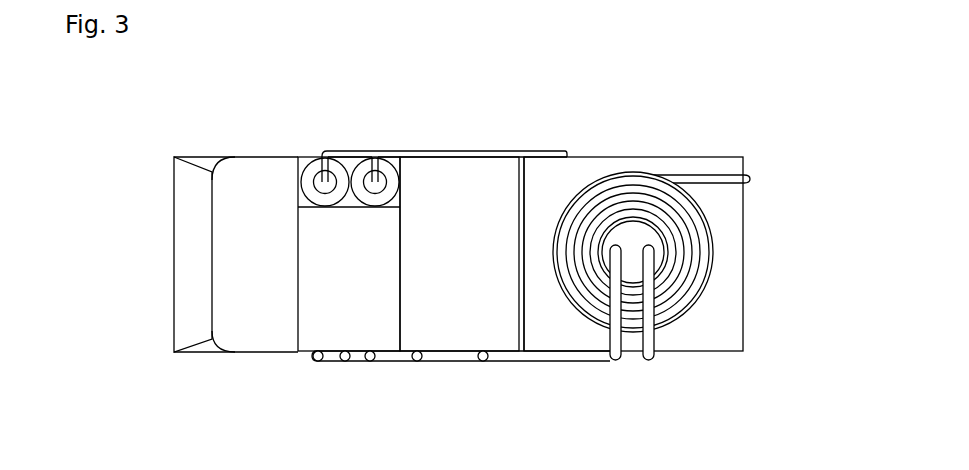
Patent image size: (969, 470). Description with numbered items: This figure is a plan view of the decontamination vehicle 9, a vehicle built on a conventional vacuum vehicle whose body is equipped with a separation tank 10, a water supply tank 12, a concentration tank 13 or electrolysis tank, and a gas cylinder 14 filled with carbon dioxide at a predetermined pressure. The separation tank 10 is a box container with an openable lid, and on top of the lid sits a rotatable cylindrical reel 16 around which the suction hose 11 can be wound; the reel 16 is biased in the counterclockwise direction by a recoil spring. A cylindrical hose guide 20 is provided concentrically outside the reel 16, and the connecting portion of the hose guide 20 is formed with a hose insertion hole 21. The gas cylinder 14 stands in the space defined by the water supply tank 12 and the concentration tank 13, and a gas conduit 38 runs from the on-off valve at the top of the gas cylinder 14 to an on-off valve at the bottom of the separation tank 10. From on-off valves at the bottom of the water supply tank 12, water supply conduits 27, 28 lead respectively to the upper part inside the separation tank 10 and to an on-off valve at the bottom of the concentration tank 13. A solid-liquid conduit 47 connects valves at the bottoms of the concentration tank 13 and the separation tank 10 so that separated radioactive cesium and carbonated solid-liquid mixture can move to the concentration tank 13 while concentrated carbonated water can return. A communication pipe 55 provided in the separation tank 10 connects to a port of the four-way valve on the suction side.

The decontamination vehicle 9 is at (252, 141).
The separation tank 10 is at (597, 167).
The suction hose 11 is at (705, 182).
The water supply tank 12 is at (452, 323).
The concentration tank 13 is at (360, 325).
The gas cylinder 14 is at (393, 165).
The reel 16 is at (636, 228).
The hose guide 20 is at (703, 288).
The hose insertion hole 21 is at (667, 175).
The water supply conduit 27 is at (608, 332).
The water supply conduit 28 is at (392, 360).
The gas conduit 38 is at (482, 150).
The solid-liquid conduit 47 is at (332, 363).
The communication pipe 55 is at (657, 335).